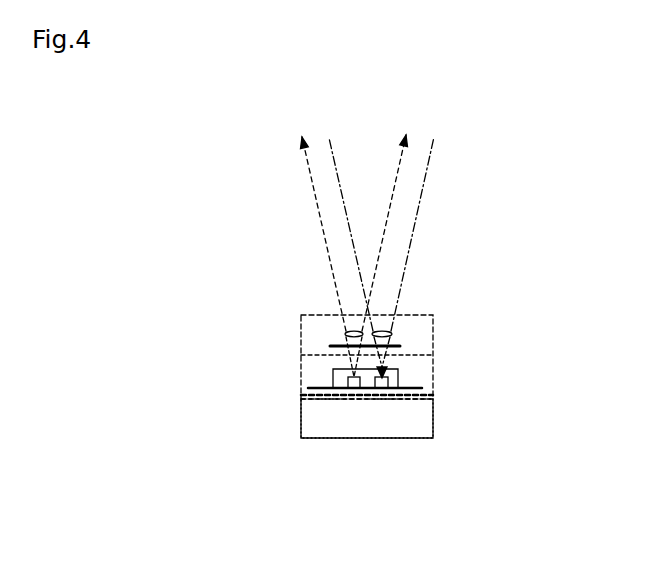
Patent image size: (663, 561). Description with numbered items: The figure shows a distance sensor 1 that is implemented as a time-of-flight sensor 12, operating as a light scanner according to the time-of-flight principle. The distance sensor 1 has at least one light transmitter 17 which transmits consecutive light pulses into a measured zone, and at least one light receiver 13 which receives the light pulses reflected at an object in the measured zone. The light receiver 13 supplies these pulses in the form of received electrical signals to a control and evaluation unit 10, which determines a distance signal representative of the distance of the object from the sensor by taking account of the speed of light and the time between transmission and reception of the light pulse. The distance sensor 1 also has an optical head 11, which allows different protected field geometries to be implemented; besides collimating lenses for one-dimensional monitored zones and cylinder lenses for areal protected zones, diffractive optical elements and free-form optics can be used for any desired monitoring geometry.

The distance sensor 1 is at (504, 195).
The time-of-flight sensor 12 is at (517, 235).
The optical head 11 is at (387, 333).
The light receiver 13 is at (383, 388).
The light transmitter 17 is at (348, 388).
The control and evaluation unit 10 is at (403, 427).